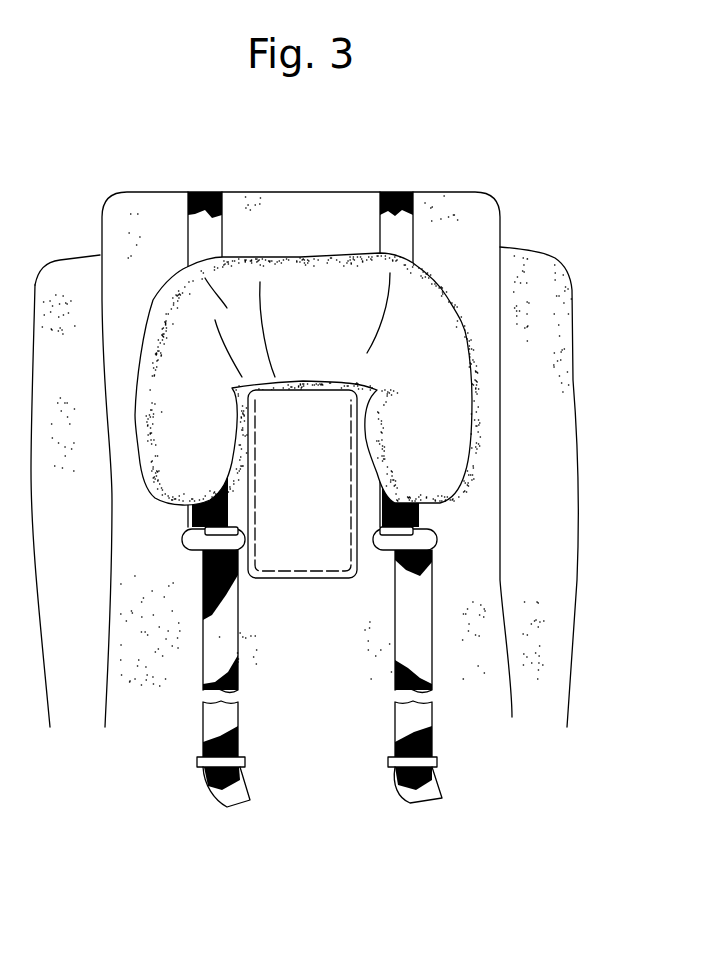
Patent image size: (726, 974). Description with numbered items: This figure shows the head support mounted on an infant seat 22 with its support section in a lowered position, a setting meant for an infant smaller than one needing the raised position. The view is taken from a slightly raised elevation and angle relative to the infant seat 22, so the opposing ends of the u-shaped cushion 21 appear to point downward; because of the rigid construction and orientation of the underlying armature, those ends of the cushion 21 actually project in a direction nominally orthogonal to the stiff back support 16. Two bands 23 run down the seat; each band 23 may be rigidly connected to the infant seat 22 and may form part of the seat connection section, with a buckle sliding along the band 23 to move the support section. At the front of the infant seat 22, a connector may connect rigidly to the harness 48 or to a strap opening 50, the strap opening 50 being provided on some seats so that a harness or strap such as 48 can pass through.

The stiff back support 16 is at (287, 553).
The u-shaped cushion 21 is at (303, 283).
The infant seat 22 is at (538, 273).
The band 23 is at (398, 212).
The harness 48 is at (222, 792).
The strap opening 50 is at (197, 760).